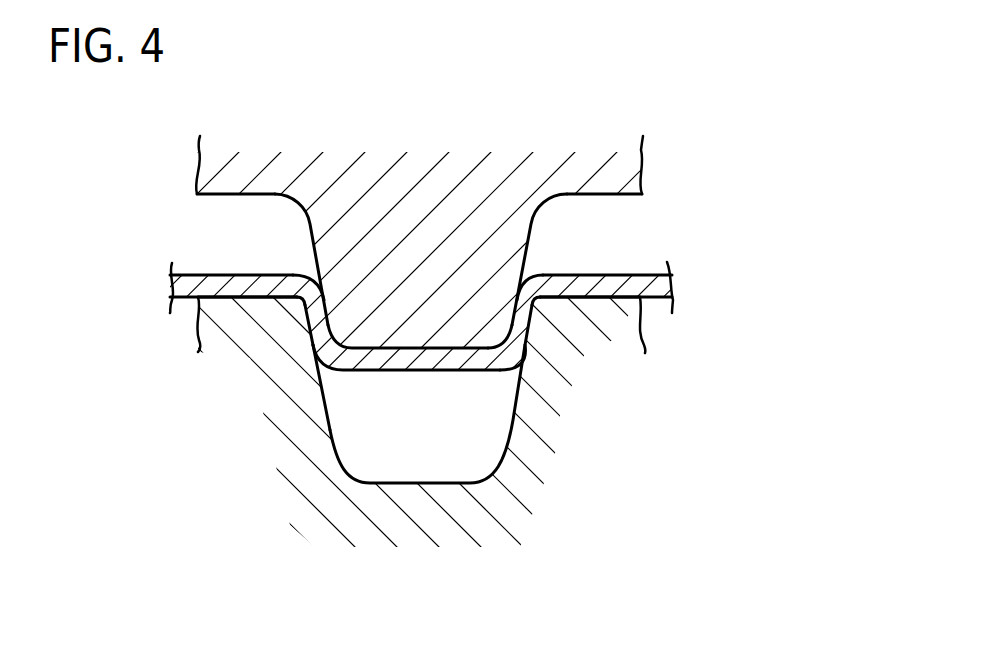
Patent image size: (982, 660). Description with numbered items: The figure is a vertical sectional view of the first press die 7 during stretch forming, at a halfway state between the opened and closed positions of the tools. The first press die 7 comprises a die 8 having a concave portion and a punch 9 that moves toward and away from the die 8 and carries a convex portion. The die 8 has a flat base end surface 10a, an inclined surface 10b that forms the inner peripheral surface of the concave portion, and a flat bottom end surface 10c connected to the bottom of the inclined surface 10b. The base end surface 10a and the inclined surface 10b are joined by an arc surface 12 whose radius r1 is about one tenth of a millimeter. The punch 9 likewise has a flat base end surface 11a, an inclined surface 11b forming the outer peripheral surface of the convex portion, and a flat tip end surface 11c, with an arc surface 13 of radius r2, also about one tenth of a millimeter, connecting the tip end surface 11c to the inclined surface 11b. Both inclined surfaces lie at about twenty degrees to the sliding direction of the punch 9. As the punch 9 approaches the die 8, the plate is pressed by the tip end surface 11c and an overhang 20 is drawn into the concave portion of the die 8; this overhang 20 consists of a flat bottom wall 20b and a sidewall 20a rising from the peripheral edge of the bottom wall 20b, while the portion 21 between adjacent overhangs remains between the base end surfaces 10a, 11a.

The first press die 7 is at (722, 208).
The die 8 is at (560, 415).
The punch 9 is at (607, 188).
The base end surface 10a is at (195, 275).
The inclined surface 10b is at (418, 383).
The bottom end surface 10c is at (368, 483).
The base end surface 11a is at (222, 196).
The inclined surface 11b is at (313, 238).
The tip end surface 11c is at (410, 349).
The arc surface 12 is at (297, 277).
The arc surface 13 is at (523, 350).
The overhang 20 is at (268, 606).
The sidewall 20a is at (313, 347).
The bottom wall 20b is at (362, 371).
The portion between adjacent overhangs 21 is at (202, 340).
The radius of arc surface r1 is at (297, 307).
The radius of arc surface r2 is at (453, 292).